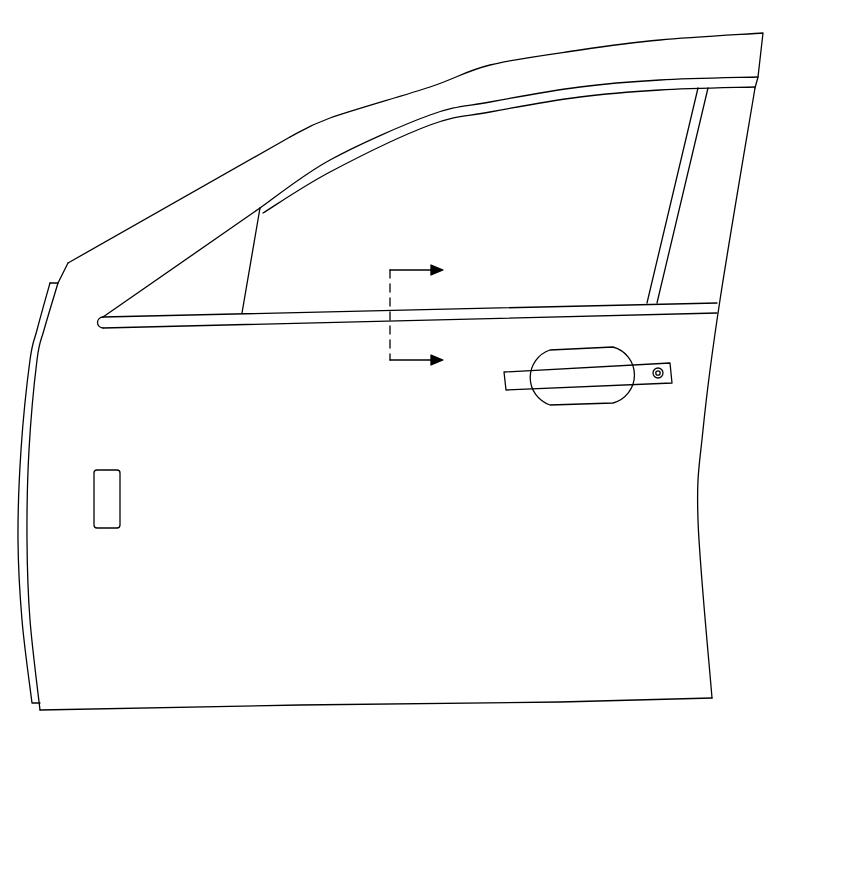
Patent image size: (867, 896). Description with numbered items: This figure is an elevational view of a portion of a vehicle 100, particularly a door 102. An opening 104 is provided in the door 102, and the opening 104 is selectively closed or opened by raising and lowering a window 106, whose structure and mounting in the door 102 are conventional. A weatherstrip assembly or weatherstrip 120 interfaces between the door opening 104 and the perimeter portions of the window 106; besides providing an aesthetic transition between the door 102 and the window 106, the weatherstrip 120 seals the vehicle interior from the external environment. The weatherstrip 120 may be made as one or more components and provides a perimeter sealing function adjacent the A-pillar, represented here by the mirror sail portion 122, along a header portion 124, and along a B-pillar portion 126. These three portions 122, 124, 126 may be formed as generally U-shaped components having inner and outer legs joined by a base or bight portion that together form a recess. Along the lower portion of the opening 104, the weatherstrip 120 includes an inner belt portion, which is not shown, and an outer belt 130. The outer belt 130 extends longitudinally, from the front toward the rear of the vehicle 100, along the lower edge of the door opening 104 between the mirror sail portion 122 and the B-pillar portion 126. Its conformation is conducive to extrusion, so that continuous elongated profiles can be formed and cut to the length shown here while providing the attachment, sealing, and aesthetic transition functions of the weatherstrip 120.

The vehicle 100 is at (133, 95).
The door 102 is at (687, 517).
The opening 104 is at (638, 88).
The window 106 is at (501, 222).
The weatherstrip 120 is at (340, 155).
The mirror sail portion 122 is at (238, 275).
The header portion 124 is at (553, 98).
The B-pillar portion 126 is at (667, 217).
The outer belt 130 is at (305, 325).